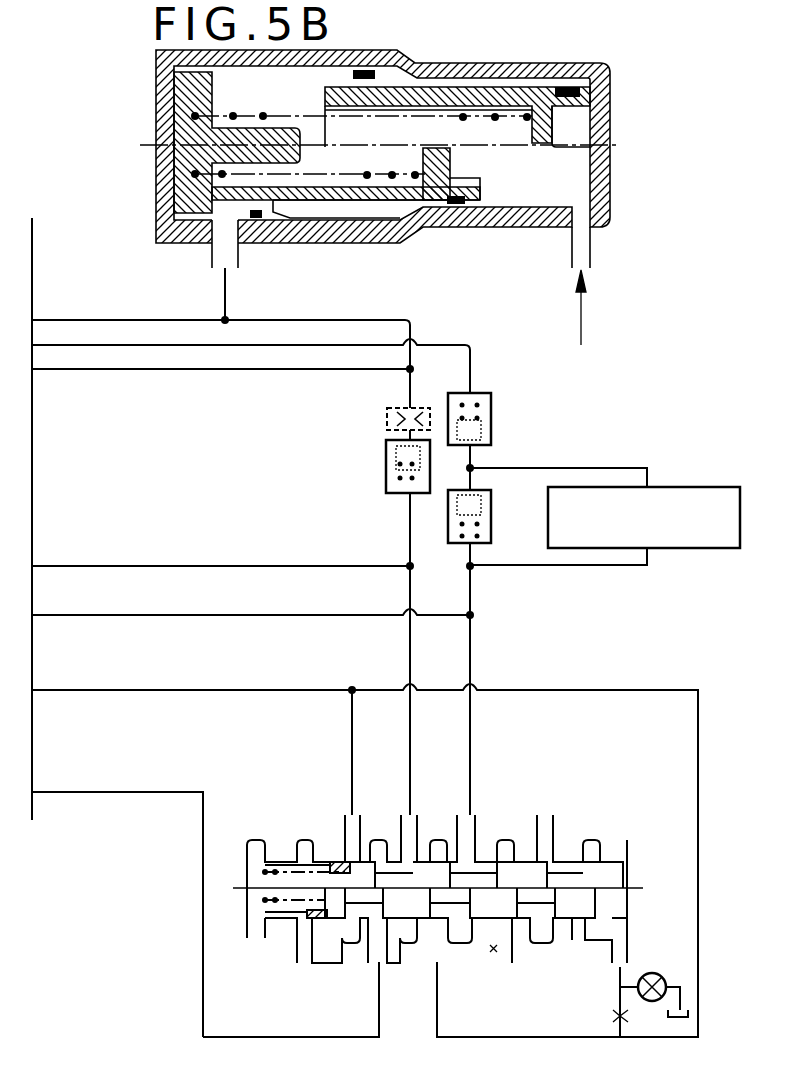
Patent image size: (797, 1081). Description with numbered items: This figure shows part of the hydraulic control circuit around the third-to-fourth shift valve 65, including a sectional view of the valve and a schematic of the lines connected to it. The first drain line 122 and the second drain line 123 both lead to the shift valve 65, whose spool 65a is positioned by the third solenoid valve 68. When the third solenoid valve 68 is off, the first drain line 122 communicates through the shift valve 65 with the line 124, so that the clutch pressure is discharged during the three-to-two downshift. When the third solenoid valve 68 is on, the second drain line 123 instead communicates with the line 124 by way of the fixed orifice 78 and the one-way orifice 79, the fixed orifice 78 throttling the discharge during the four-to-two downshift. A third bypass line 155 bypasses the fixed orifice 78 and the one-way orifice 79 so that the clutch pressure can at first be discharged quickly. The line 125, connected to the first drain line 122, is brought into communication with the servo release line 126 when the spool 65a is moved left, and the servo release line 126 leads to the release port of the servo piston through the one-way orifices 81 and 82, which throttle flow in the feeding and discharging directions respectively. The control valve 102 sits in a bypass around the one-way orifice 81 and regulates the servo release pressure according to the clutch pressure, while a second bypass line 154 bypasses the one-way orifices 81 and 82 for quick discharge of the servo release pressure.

The second drain line 123 is at (340, 318).
The fixed orifice 78 is at (386, 420).
The one-way orifice 79 is at (386, 480).
The one-way orifice 82 is at (491, 418).
The one-way orifice 81 is at (491, 520).
The 2-3 control valve 102 is at (680, 487).
The third bypass line 155 is at (210, 566).
The second bypass line 154 is at (210, 615).
The first drain line 122 is at (190, 690).
The line 125 is at (580, 690).
The servo release line 126 is at (470, 735).
The 3-4 shift valve 65 is at (438, 869).
The spool 65a is at (505, 862).
The third solenoid valve 68 is at (655, 973).
The line 124 is at (255, 1037).